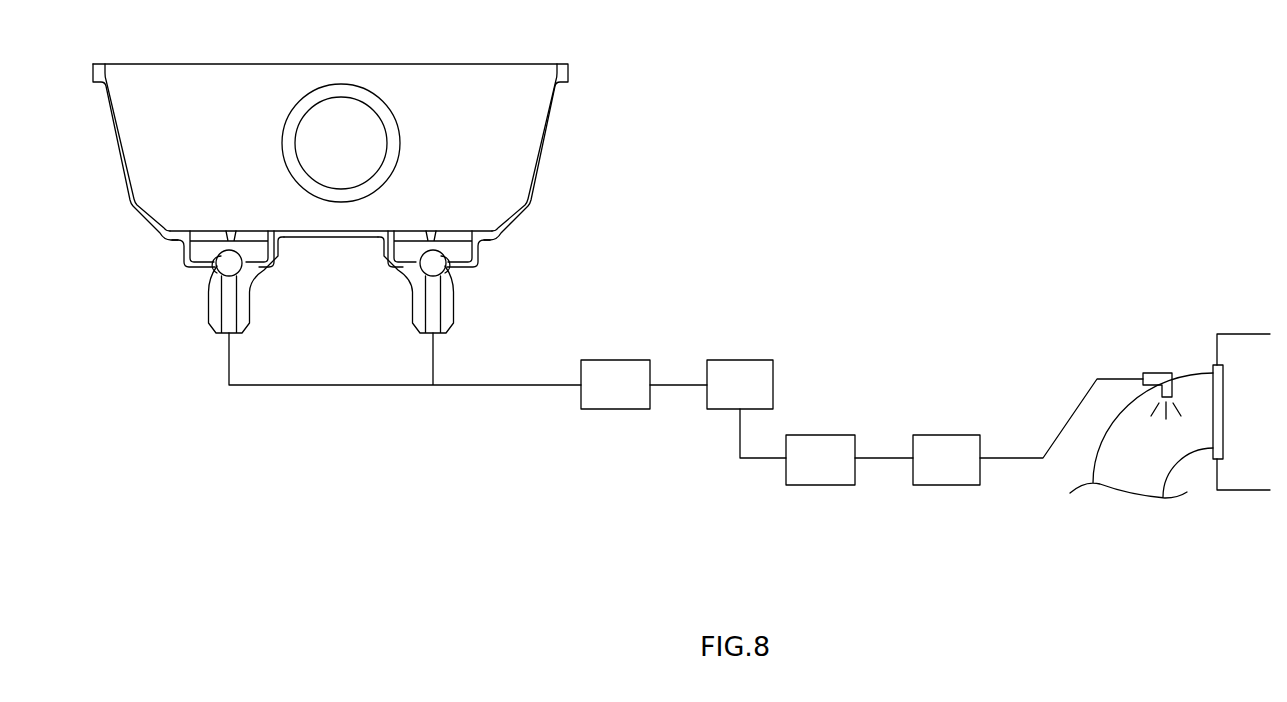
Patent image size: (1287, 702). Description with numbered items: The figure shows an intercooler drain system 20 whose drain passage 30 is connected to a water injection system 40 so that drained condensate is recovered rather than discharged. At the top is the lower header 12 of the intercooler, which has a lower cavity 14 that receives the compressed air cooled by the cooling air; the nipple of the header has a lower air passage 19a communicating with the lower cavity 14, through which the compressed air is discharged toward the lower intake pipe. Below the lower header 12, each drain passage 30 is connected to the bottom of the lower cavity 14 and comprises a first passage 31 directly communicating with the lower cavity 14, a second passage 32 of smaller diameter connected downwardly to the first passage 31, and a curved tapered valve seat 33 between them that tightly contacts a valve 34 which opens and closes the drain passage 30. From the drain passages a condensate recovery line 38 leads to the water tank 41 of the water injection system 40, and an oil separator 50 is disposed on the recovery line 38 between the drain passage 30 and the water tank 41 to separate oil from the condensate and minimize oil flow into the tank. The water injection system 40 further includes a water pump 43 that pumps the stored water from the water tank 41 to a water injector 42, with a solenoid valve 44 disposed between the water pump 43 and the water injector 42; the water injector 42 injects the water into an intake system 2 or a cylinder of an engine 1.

The engine 1 is at (1245, 490).
The intake system 2 is at (1143, 483).
The lower header 12 is at (541, 146).
The lower cavity 14 is at (200, 155).
The lower air passage 19a is at (322, 155).
The intercooler drain system 20 is at (584, 246).
The drain passage 30 is at (131, 316).
The first passage 31 is at (200, 252).
The second passage 32 is at (228, 309).
The valve seat 33 is at (207, 266).
The valve 34 is at (238, 268).
The recovery line 38 is at (478, 388).
The water injection system 40 is at (772, 268).
The water tank 41 is at (742, 360).
The water injector 42 is at (1158, 373).
The water pump 43 is at (823, 435).
The solenoid valve 44 is at (950, 435).
The oil separator 50 is at (650, 360).